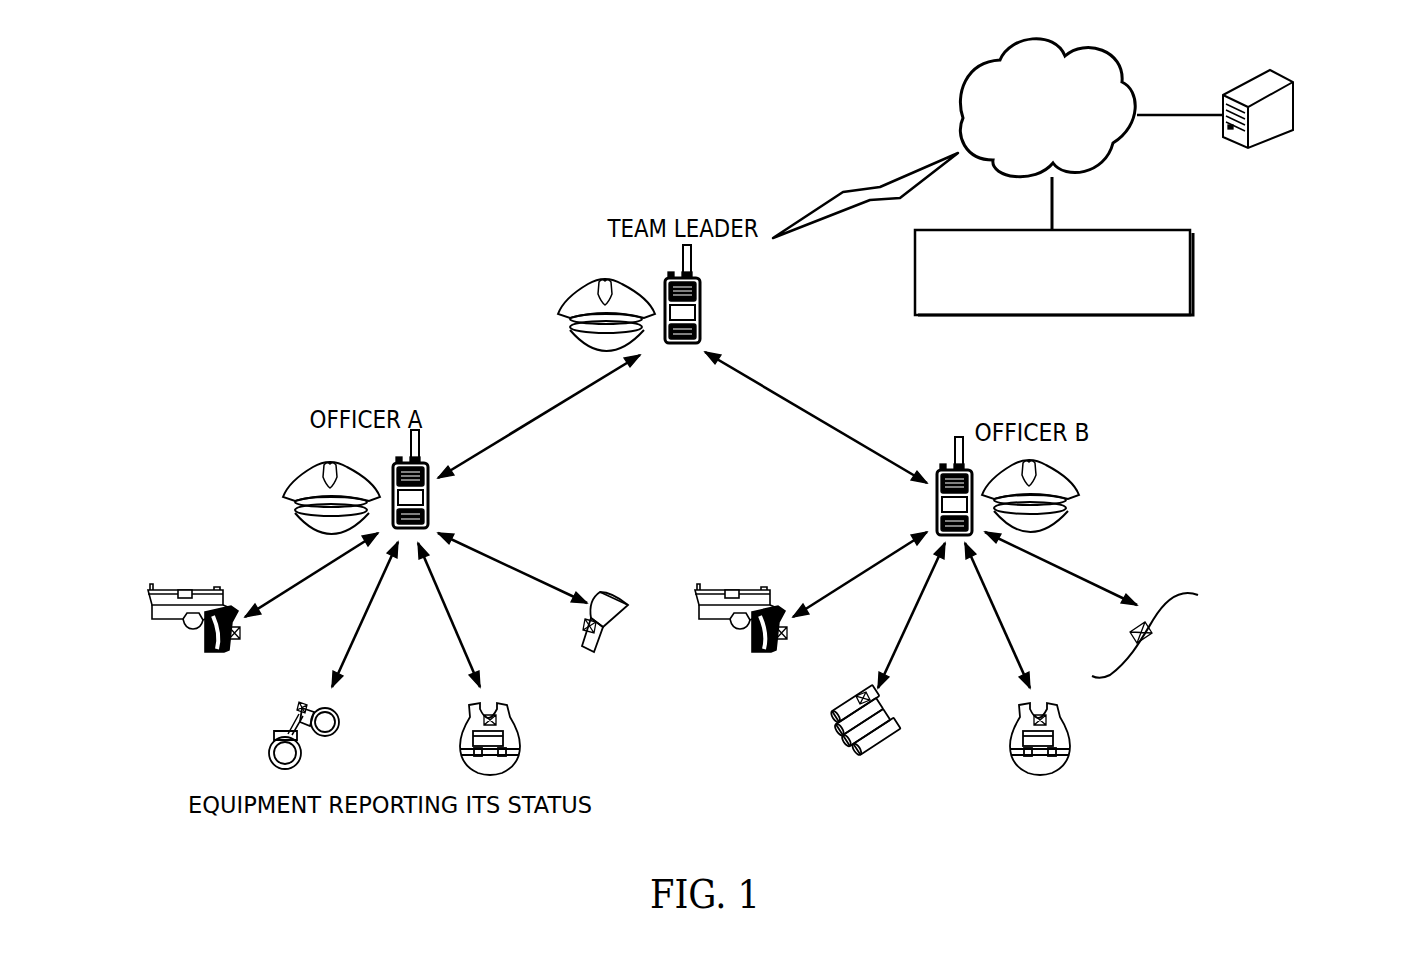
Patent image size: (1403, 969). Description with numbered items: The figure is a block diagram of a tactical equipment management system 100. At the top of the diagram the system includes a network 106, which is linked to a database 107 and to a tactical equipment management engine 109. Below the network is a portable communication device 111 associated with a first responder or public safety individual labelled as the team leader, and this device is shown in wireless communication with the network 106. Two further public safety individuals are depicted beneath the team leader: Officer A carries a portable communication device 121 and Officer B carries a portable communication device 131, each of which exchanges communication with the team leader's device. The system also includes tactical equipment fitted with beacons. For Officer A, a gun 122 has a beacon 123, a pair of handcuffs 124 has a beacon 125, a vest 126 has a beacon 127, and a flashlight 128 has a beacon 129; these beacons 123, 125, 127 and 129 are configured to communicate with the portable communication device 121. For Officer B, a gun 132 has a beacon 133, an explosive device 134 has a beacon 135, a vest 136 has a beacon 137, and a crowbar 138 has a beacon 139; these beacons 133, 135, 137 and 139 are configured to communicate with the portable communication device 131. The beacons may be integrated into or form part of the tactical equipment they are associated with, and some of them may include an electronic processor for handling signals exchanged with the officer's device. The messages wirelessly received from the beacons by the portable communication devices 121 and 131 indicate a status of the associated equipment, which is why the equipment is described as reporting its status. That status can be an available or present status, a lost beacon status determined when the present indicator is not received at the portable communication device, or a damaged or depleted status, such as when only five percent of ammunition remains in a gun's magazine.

The tactical equipment management system 100 is at (421, 176).
The network 106 is at (962, 122).
The database 107 is at (1293, 100).
The tactical equipment management engine 109 is at (1193, 275).
The portable communication device 111 is at (700, 313).
The portable communication device 121 is at (428, 497).
The gun 122 is at (185, 592).
The beacon 123 is at (240, 633).
The pair of handcuffs 124 is at (303, 752).
The beacon 125 is at (300, 705).
The vest 126 is at (518, 747).
The beacon 127 is at (484, 720).
The flashlight 128 is at (613, 635).
The beacon 129 is at (585, 626).
The portable communication device 131 is at (937, 510).
The gun 132 is at (732, 592).
The beacon 133 is at (787, 631).
The explosive device 134 is at (880, 735).
The beacon 135 is at (860, 697).
The vest 136 is at (1068, 747).
The beacon 137 is at (1034, 720).
The crowbar 138 is at (1153, 622).
The beacon 139 is at (1134, 633).